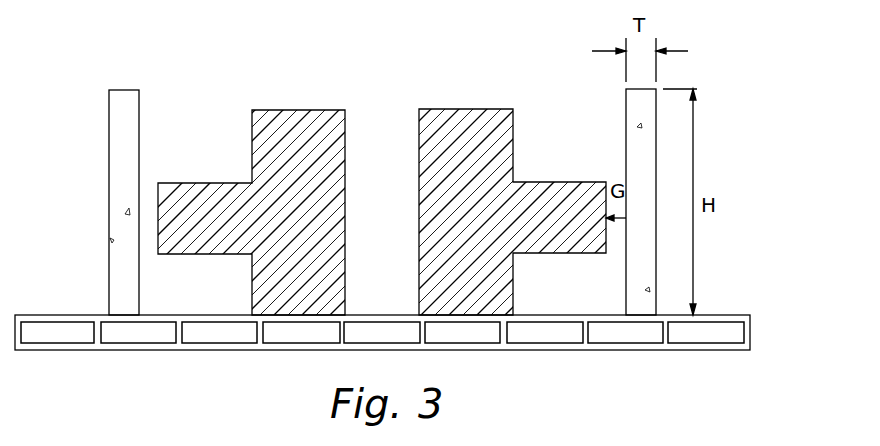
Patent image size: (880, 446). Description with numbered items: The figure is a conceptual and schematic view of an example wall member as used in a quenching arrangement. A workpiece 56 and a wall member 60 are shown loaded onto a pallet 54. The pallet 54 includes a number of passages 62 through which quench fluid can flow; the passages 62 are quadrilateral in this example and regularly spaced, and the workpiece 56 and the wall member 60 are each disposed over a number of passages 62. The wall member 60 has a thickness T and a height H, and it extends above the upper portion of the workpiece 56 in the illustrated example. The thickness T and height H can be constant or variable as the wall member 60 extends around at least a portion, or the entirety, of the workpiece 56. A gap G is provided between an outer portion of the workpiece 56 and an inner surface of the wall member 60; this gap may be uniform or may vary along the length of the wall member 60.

The pallet 54 is at (750, 328).
The workpiece 56 is at (284, 110).
The wall member 60 is at (109, 131).
The passages 62 is at (552, 331).